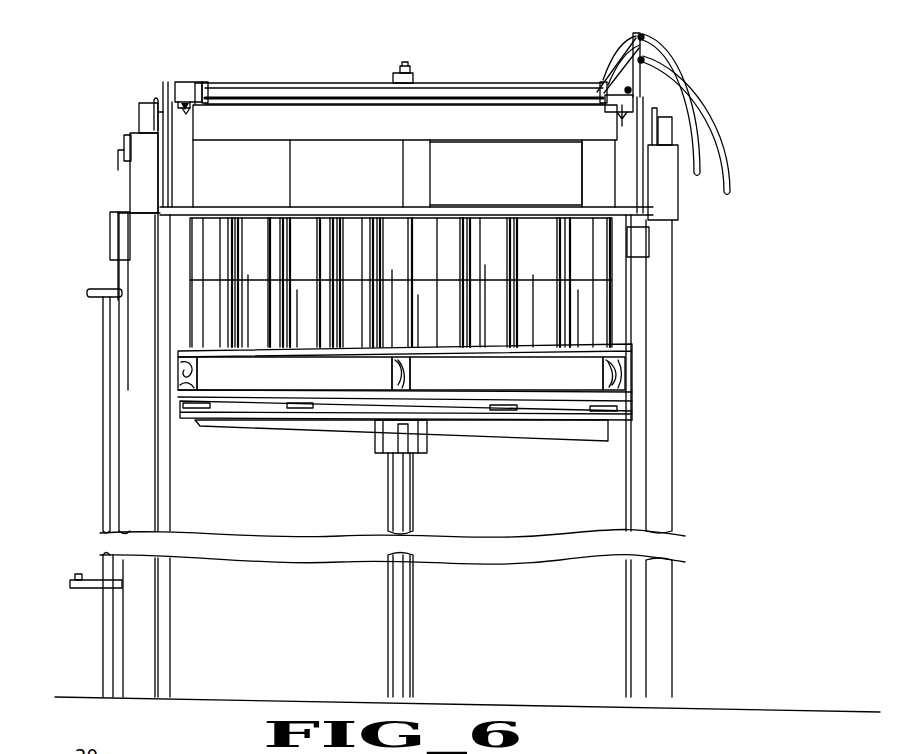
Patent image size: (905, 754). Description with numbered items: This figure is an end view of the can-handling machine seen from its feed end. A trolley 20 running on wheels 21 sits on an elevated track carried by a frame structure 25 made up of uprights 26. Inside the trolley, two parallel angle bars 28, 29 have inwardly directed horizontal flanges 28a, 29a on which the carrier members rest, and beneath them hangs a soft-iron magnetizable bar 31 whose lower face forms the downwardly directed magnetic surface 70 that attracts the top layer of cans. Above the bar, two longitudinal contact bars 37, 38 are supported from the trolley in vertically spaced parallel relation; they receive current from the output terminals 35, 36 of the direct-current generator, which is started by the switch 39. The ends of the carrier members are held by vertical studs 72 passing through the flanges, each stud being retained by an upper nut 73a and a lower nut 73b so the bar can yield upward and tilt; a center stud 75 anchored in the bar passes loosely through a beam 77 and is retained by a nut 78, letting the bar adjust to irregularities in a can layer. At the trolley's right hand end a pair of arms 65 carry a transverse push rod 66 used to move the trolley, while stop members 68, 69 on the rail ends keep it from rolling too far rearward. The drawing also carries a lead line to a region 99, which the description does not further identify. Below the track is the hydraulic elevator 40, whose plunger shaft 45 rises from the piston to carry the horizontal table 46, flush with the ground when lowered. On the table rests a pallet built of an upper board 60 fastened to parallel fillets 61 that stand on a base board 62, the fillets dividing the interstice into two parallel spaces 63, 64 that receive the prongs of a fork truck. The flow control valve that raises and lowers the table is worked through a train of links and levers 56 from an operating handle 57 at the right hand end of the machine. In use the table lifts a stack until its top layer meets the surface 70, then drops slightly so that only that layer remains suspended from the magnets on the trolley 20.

The trolley 20 is at (255, 95).
The wheels 21 is at (147, 110).
The frame structure 25 is at (670, 290).
The uprights 26 is at (143, 470).
The angle bar 28 is at (630, 88).
The horizontal flange 28a is at (600, 93).
The angle bar 29 is at (168, 96).
The horizontal flange 29a is at (172, 104).
The magnetizable bar 31 is at (420, 131).
The output terminal 35 is at (678, 100).
The output terminal 36 is at (708, 112).
The contact bar 37 is at (645, 60).
The contact bar 38 is at (645, 37).
The switch 39 is at (115, 247).
The hydraulic elevator 40 is at (425, 513).
The plunger shaft 45 is at (398, 487).
The table 46 is at (478, 421).
The train of links and levers 56 is at (78, 576).
The operating handle 57 is at (100, 290).
The upper board 60 is at (560, 352).
The fillets 61 is at (195, 372).
The base board 62 is at (240, 400).
The space 63 is at (340, 384).
The space 64 is at (472, 384).
The arms 65 is at (212, 86).
The push rod 66 is at (483, 95).
The stop member 68 is at (663, 213).
The stop member 69 is at (145, 183).
The magnetic surface 70 is at (347, 150).
The stud 72 is at (184, 82).
The upper nut 73a is at (733, 73).
The lower nut 73b is at (187, 103).
The stud 75 is at (406, 66).
The beam 77 is at (410, 82).
The nut 78 is at (406, 74).
The opening 99 is at (565, 177).